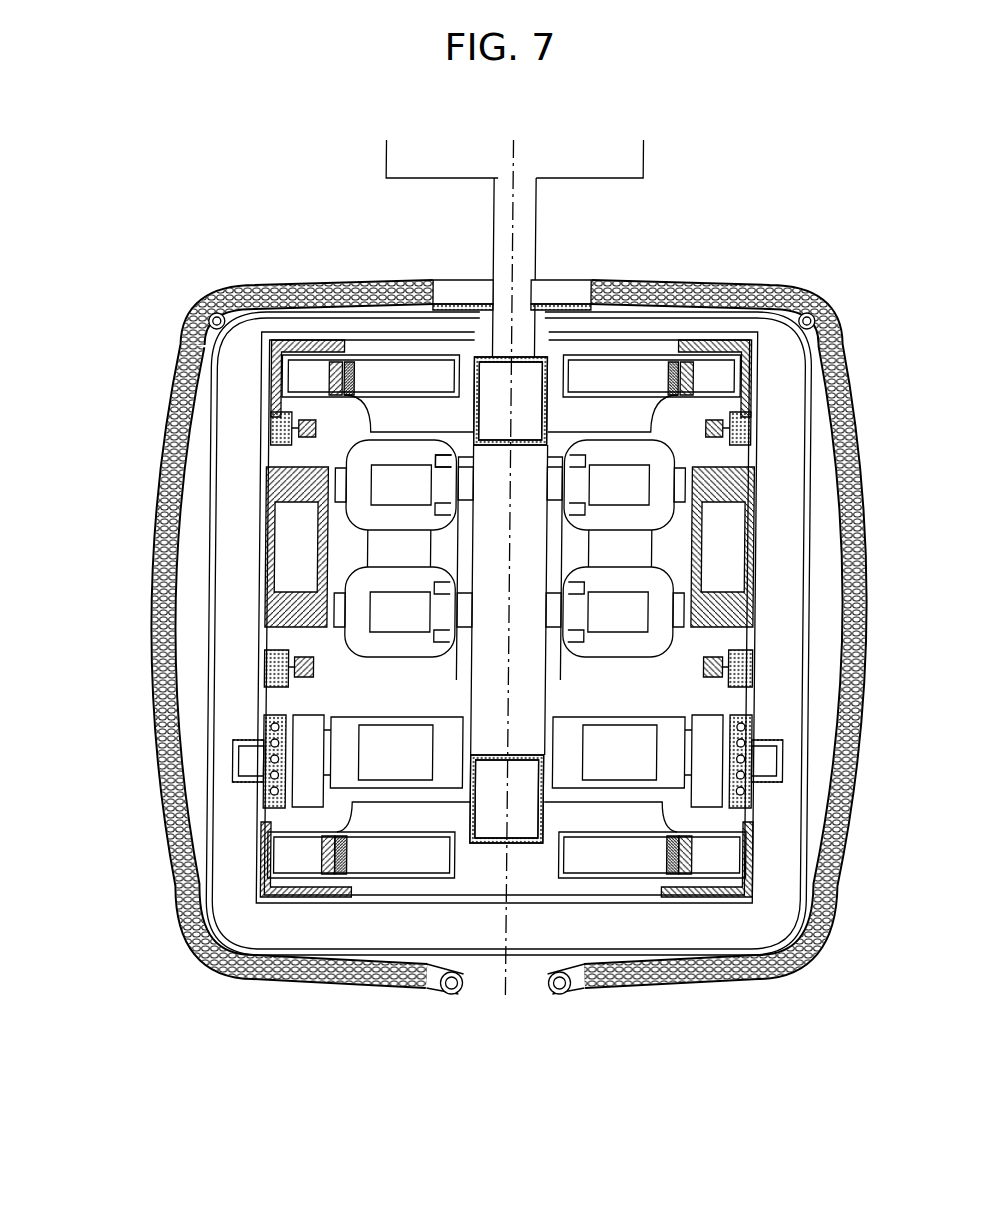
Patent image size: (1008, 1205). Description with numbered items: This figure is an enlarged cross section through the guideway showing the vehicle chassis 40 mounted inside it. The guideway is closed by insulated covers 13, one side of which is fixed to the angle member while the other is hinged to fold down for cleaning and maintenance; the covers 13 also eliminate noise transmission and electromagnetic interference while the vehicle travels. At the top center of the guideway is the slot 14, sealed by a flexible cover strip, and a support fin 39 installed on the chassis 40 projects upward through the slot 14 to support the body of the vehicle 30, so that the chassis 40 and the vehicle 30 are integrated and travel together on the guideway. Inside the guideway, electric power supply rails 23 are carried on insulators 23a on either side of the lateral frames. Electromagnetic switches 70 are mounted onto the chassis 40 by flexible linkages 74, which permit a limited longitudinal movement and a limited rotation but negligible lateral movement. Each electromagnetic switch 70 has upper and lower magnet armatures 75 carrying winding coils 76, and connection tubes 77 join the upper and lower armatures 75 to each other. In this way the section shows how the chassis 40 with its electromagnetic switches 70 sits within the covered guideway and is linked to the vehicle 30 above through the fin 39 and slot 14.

The covers 13 is at (168, 428).
The slot 14 is at (488, 282).
The electric power supply rails 23 is at (318, 428).
The insulators 23a is at (187, 363).
The vehicle 30 is at (643, 178).
The support fin 39 is at (535, 262).
The vehicle chassis 40 is at (547, 670).
The electromagnetic switches 70 is at (360, 657).
The flexible linkages 74 is at (443, 458).
The armatures 75 is at (345, 628).
The winding coils 76 is at (357, 508).
The connection tubes 77 is at (377, 557).